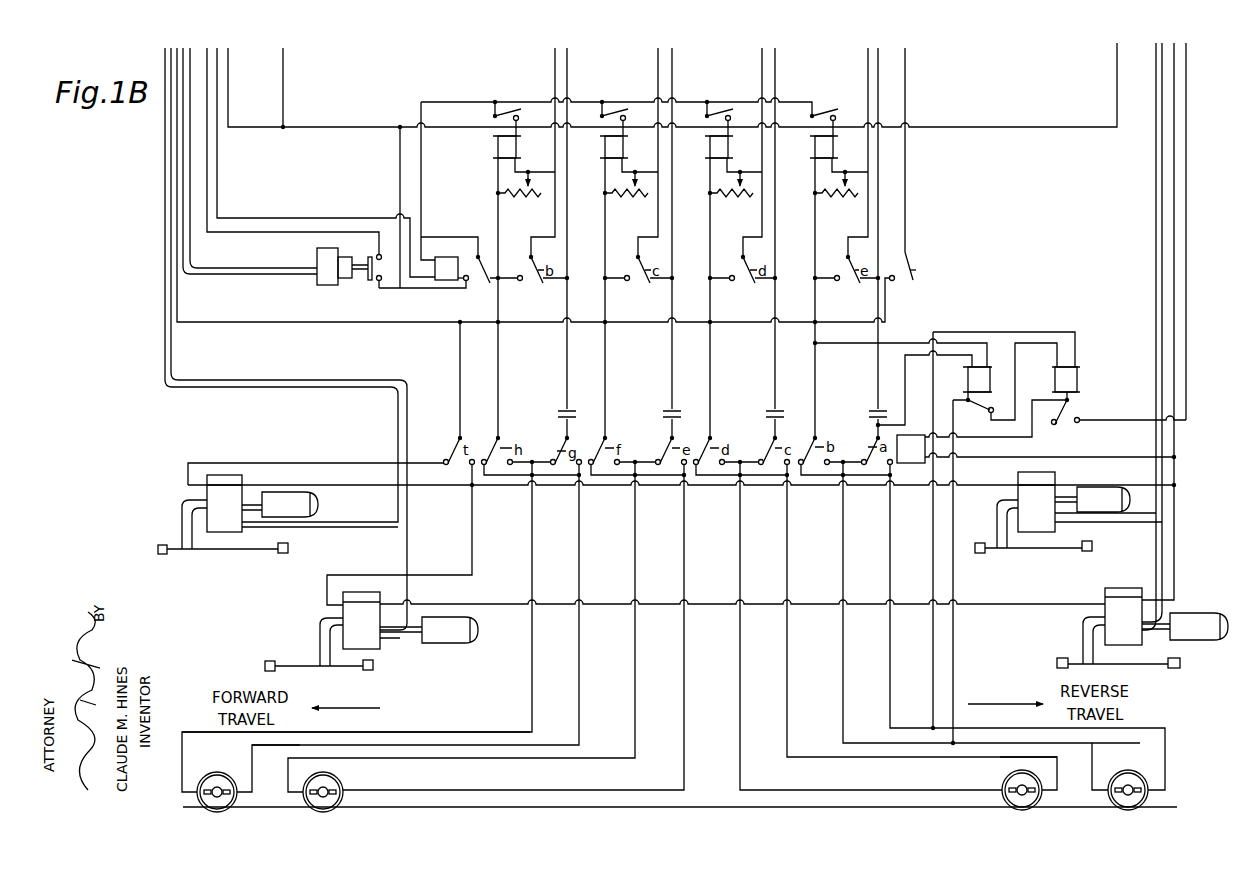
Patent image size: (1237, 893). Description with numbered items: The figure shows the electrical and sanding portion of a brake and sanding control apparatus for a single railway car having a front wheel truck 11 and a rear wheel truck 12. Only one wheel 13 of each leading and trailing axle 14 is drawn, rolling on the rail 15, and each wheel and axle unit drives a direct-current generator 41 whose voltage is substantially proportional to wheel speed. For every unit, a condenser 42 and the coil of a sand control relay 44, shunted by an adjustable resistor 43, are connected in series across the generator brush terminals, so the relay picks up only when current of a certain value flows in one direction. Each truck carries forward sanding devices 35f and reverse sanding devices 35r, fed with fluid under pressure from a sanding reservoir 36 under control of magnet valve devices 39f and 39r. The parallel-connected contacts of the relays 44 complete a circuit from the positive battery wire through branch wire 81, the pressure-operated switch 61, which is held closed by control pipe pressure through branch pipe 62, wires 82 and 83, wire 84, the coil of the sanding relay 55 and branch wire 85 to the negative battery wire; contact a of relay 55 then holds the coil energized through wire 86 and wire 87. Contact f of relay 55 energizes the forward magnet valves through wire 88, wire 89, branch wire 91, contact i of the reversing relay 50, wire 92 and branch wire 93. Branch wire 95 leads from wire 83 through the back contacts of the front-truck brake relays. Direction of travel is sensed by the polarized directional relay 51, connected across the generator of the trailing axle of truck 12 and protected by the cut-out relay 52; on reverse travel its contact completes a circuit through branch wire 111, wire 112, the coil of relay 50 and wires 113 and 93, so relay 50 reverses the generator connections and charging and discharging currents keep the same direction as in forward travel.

The front wheel truck 11 is at (276, 770).
The rear wheel truck 12 is at (1084, 766).
The wheel 13 is at (231, 802).
The axle 14 is at (220, 788).
The rail 15 is at (692, 806).
The forward sanding devices 35f is at (164, 544).
The reverse sanding devices 35r is at (296, 642).
The sanding reservoir 36 is at (317, 503).
The forward sanding magnet valve device 39f is at (204, 494).
The reverse sanding magnet valve device 39r is at (340, 612).
The generator 41 is at (204, 797).
The condenser 42 is at (557, 409).
The adjustable resistor 43 is at (515, 194).
The sand control relay 44 is at (491, 148).
The reversing relay 50 is at (906, 464).
The directional relay 51 is at (1081, 372).
The cut-out relay 52 is at (1008, 362).
The sanding relay 55 is at (448, 259).
The pressure-operated switch 61 is at (314, 286).
The branch pipe 62 is at (225, 270).
The branch wire 81 is at (307, 233).
The wire 82 is at (398, 167).
The wire 83 is at (335, 127).
The wire 84 is at (421, 178).
The branch wire 85 is at (272, 218).
The wire 86 is at (431, 298).
The wire 87 is at (440, 237).
The wire 88 is at (905, 222).
The wire 89 is at (210, 322).
The branch wire 91 is at (458, 397).
The wire 92 is at (330, 463).
The branch wire 93 is at (474, 520).
The branch wire 95 is at (285, 72).
The branch wire 111 is at (1187, 88).
The wire 112 is at (1033, 440).
The wire 113 is at (1100, 447).